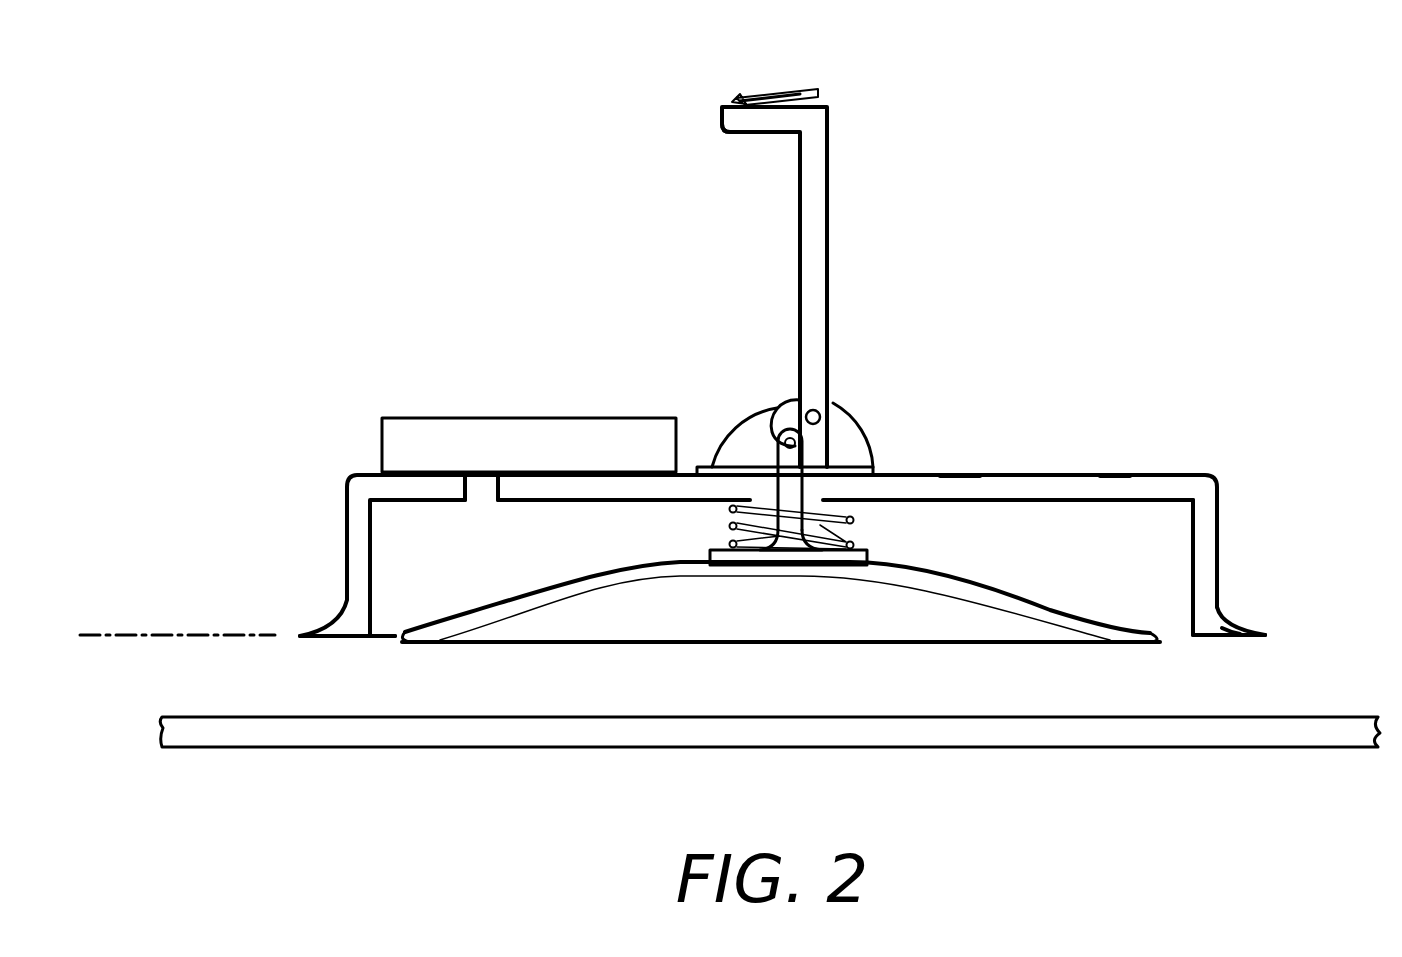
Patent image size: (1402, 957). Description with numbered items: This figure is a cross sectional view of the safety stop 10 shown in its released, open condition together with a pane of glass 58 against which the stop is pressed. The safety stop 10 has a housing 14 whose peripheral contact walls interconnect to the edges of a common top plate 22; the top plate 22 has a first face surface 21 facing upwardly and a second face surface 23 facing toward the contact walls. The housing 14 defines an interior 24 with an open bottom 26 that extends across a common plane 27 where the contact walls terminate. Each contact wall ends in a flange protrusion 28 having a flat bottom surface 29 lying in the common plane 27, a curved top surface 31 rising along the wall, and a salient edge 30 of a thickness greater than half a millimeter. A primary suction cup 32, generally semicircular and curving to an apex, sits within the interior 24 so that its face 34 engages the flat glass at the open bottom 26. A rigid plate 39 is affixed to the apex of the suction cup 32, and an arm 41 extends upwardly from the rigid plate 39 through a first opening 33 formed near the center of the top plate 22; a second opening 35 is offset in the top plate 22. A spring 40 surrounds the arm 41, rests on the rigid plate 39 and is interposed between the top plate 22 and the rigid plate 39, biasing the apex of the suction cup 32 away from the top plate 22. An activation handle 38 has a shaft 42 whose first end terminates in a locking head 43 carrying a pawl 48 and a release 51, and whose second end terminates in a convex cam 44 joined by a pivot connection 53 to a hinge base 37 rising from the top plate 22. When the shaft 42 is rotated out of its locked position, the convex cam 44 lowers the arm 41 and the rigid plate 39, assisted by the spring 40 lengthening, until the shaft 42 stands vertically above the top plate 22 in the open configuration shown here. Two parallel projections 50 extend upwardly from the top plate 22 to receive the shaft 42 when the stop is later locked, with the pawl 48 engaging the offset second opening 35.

The safety stop 10 is at (550, 283).
The housing 14 is at (963, 473).
The first face surface 21 is at (1158, 473).
The top plate 22 is at (1112, 487).
The second face surface 23 is at (1148, 503).
The interior 24 is at (998, 528).
The open bottom 26 is at (382, 640).
The common plane 27 is at (227, 633).
The flange protrusion 28 is at (1213, 618).
The flat bottom surface 29 is at (1227, 638).
The salient edge 30 is at (1262, 636).
The curved top surface 31 is at (1235, 622).
The primary suction cup 32 is at (1018, 592).
The first opening 33 is at (855, 453).
The face 34 is at (800, 645).
The second opening 35 is at (483, 490).
The hinge base 37 is at (757, 426).
The activation handle 38 is at (833, 183).
The rigid plate 39 is at (866, 548).
The spring 40 is at (735, 525).
The arm 41 is at (773, 448).
The shaft 42 is at (818, 263).
The locking head 43 is at (772, 118).
The convex cam 44 is at (797, 400).
The pawl 48 is at (760, 100).
The parallel projections 50 is at (462, 440).
The release 51 is at (798, 63).
The pivot connection 53 is at (825, 412).
The pane of glass 58 is at (487, 740).